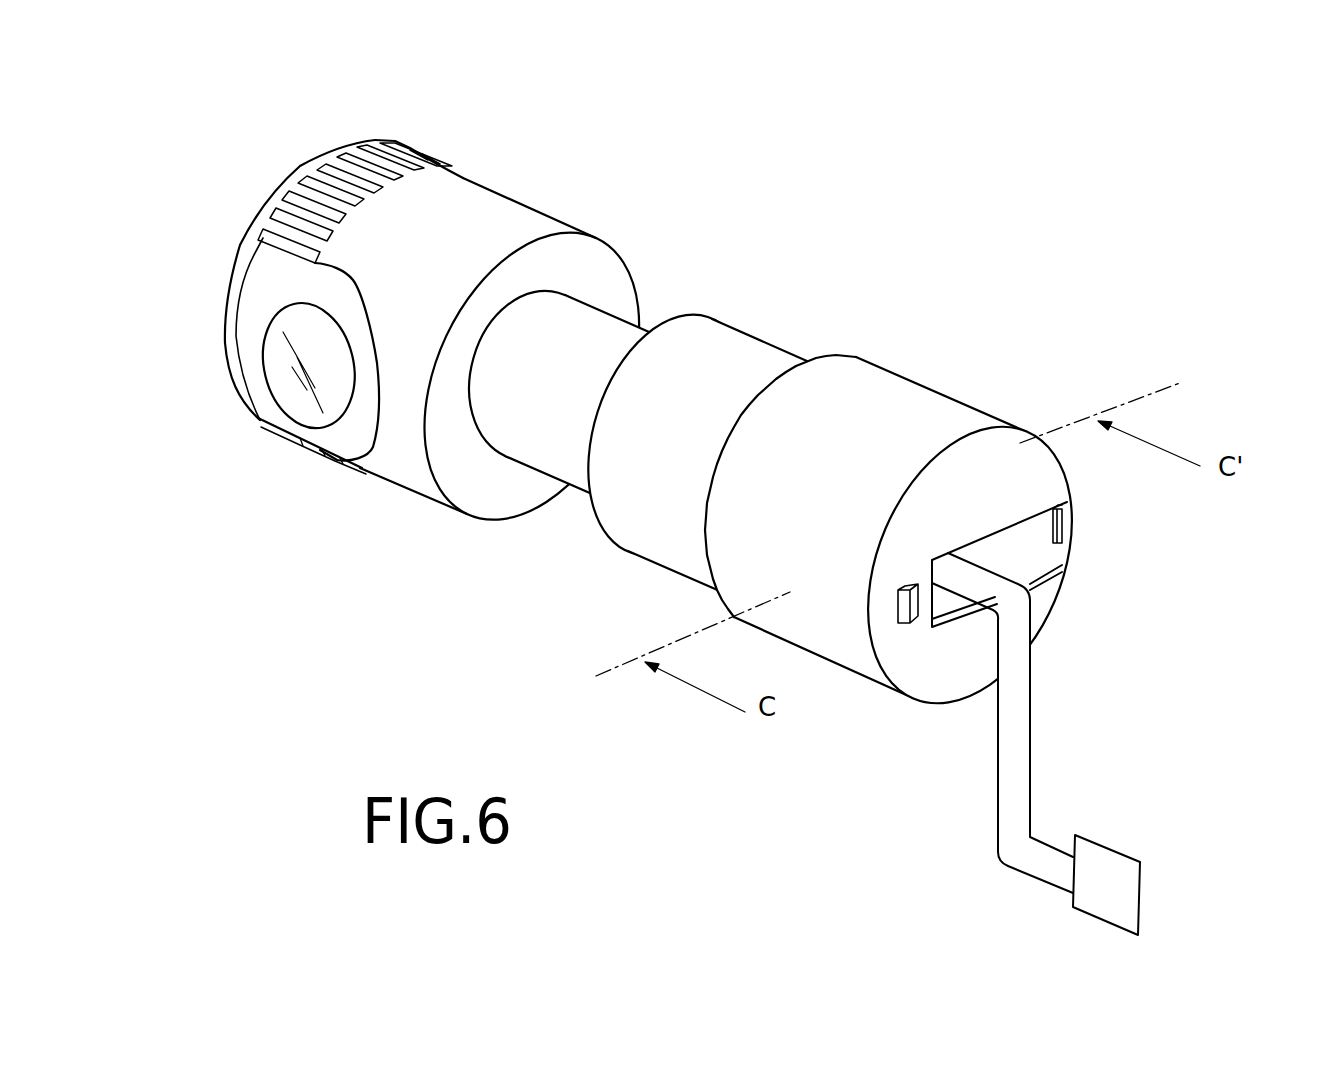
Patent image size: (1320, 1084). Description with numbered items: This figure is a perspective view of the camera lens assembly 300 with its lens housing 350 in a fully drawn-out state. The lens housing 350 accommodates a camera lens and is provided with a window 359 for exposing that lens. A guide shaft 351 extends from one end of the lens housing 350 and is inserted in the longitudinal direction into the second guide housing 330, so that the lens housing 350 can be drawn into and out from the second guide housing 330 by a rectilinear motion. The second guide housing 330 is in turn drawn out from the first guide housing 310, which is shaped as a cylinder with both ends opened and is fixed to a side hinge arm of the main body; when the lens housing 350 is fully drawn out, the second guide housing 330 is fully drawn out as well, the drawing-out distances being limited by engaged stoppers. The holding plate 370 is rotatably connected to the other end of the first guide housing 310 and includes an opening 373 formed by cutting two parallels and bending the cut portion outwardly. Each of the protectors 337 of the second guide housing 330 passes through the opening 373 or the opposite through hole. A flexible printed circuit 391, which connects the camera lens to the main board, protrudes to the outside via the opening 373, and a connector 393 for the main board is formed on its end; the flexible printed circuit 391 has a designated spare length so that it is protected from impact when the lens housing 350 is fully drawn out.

The camera lens assembly 300 is at (937, 77).
The first guide housing 310 is at (913, 413).
The second guide housing 330 is at (737, 362).
The protectors 337 is at (1050, 525).
The lens housing 350 is at (391, 333).
The guide shaft 351 is at (600, 338).
The window 359 is at (284, 377).
The holding plate 370 is at (1020, 452).
The opening 373 is at (1012, 558).
The flexible printed circuit 391 is at (1015, 775).
The connector 393 is at (1128, 882).